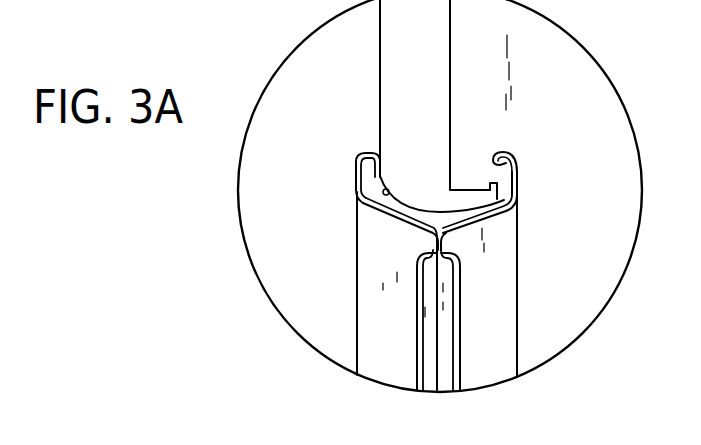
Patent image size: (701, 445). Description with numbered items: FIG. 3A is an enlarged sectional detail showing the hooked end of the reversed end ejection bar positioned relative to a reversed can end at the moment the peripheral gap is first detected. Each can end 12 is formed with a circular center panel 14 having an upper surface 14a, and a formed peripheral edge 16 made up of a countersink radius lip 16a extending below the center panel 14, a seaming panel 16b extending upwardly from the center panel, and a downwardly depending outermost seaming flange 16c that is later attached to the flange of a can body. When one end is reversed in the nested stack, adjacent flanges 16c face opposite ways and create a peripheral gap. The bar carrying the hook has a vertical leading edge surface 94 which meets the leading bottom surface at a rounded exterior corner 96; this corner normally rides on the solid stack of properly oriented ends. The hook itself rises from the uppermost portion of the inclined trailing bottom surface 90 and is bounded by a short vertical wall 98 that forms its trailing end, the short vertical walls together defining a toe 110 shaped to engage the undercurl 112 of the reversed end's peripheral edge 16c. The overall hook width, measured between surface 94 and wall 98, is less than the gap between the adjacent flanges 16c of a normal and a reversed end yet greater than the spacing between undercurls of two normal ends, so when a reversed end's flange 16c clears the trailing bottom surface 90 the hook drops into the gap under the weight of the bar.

The can end 12 is at (467, 335).
The center panel 14 is at (423, 293).
The upper surface 14a is at (417, 312).
The peripheral edge 16 is at (332, 170).
The countersink radius lip 16a is at (421, 238).
The seaming panel 16b is at (384, 221).
The seaming flange 16c is at (373, 152).
The trailing bottom surface 90 is at (492, 218).
The leading edge surface 94 is at (380, 63).
The rounded exterior corner 96 is at (389, 189).
The short vertical wall 98 is at (500, 195).
The toe 110 is at (522, 180).
The undercurl 112 is at (518, 156).